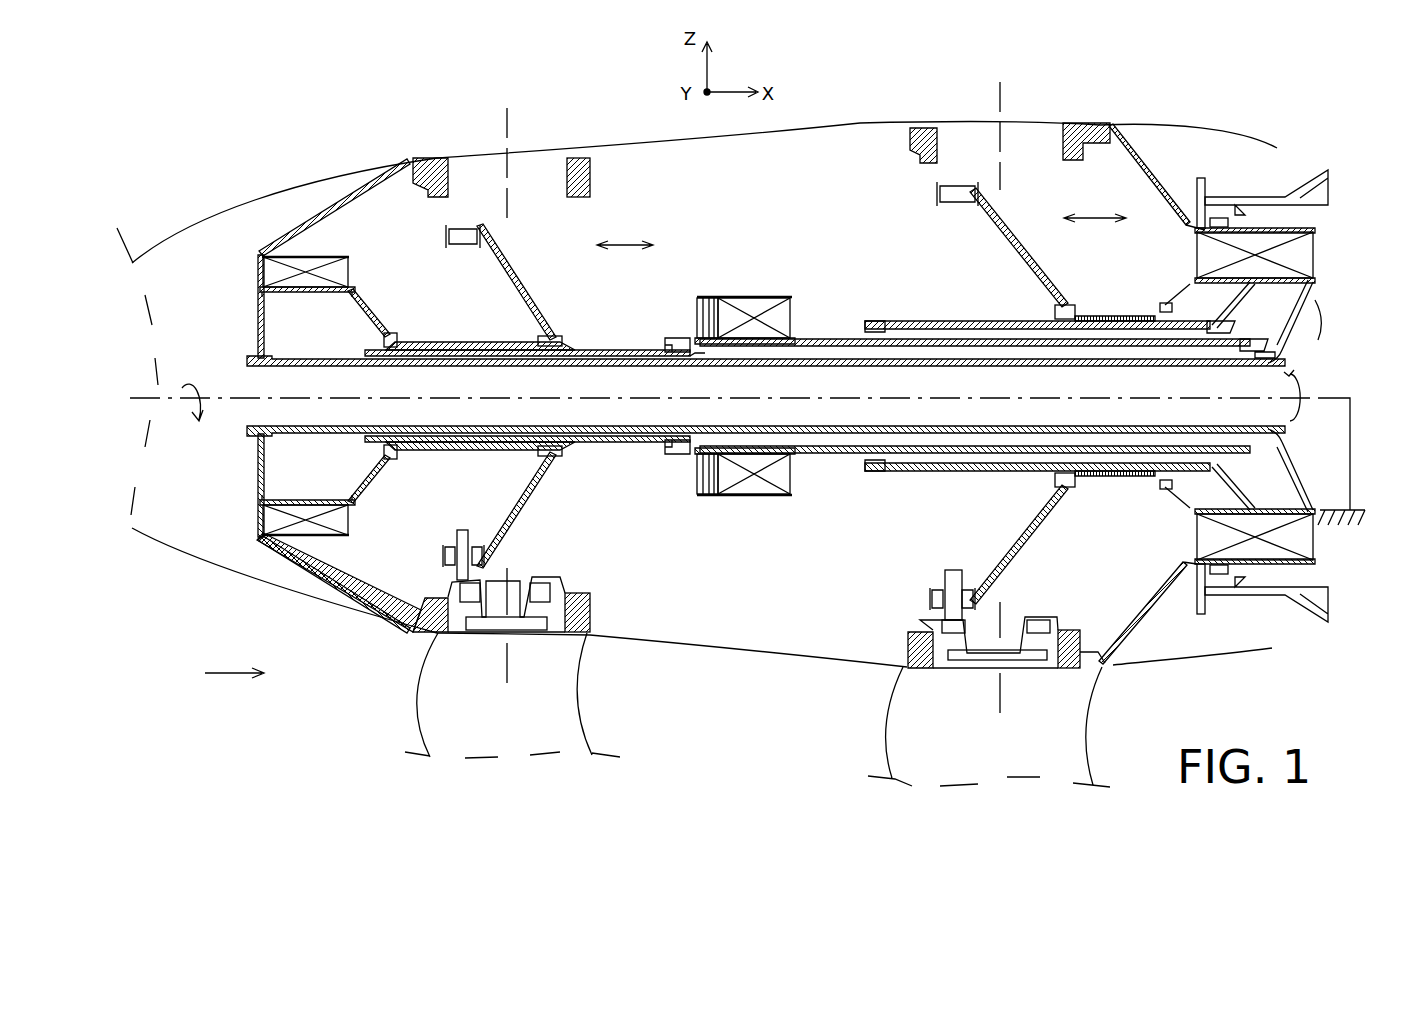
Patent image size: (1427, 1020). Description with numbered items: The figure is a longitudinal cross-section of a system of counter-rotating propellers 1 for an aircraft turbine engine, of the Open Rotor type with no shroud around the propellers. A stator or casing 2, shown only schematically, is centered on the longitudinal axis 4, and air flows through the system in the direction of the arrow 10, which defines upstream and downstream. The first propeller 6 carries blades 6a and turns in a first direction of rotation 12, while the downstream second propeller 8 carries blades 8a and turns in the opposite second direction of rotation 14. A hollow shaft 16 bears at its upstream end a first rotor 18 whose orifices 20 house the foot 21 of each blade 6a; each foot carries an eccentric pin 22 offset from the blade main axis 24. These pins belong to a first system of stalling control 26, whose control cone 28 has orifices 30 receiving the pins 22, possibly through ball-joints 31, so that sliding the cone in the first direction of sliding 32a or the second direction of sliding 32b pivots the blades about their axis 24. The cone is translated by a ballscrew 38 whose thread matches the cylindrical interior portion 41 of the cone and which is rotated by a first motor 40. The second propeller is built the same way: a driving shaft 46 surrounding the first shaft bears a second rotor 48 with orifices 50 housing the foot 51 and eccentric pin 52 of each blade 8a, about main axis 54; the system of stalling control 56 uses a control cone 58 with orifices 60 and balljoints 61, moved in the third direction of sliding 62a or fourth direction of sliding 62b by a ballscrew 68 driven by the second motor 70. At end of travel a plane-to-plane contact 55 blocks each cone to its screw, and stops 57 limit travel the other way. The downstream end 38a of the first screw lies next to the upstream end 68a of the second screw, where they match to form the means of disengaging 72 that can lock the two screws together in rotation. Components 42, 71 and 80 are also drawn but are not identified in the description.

The system of counter-rotating propellers 1 is at (832, 96).
The stator 2 is at (1352, 490).
The longitudinal axis 4 is at (135, 392).
The first propeller 6 is at (402, 708).
The blades 6a is at (562, 693).
The second propeller 8 is at (1116, 705).
The blades 8a is at (1078, 752).
The arrow 10 is at (232, 683).
The first direction of rotation 12 is at (195, 385).
The second direction of rotation 14 is at (1305, 392).
The hollow shaft 16 is at (410, 365).
The first rotor 18 is at (305, 235).
The orifices 20 is at (432, 170).
The foot 21 is at (575, 585).
The eccentric pin 22 is at (462, 530).
The main axis 24 is at (510, 125).
The first system of stalling control 26 is at (578, 336).
The control cone 28 is at (541, 294).
The orifices 30 is at (462, 245).
The ball-joints 31 is at (478, 553).
The first direction of sliding 32a is at (598, 245).
The second direction of sliding 32b is at (652, 245).
The ballscrew 38 is at (450, 356).
The downstream end 38a is at (675, 348).
The first motor 40 is at (320, 258).
The interior portion 41 is at (435, 344).
The bearing support strut 42 is at (348, 287).
The driving shaft 46 is at (1050, 352).
The second rotor 48 is at (1160, 190).
The orifices 50 is at (935, 140).
The foot 51 is at (1070, 622).
The eccentric pin 52 is at (953, 572).
The main axis 54 is at (1005, 95).
The plane-to-plane contact 55 is at (392, 335).
The system of stalling control 56 is at (1022, 288).
The stops 57 is at (665, 338).
The control cone 58 is at (1044, 253).
The orifices 60 is at (945, 200).
The balljoints 61 is at (970, 590).
The third direction of sliding 62a is at (1065, 218).
The fourth direction of sliding 62b is at (1125, 218).
The ballscrew 68 is at (1125, 339).
The upstream end 68a is at (745, 346).
The second motor 70 is at (1260, 242).
The spline 71 is at (1072, 305).
The means of disengaging 72 is at (754, 287).
The middle coil 80 is at (790, 310).